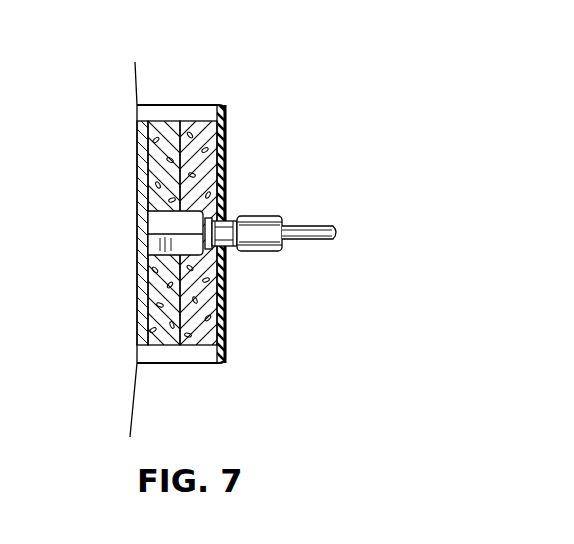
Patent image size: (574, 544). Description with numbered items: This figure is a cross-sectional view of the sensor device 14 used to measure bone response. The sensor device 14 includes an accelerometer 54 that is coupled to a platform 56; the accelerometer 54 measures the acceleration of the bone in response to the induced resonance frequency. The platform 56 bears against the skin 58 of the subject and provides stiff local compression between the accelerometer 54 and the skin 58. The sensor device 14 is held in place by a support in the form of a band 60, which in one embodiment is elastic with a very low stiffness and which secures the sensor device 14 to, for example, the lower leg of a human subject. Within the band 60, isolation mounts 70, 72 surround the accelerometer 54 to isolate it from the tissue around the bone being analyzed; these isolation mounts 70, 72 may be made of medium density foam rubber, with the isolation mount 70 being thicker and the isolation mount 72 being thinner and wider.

The sensor device 14 is at (264, 83).
The accelerometer 54 is at (185, 213).
The platform 56 is at (142, 291).
The skin 58 is at (135, 391).
The band 60 is at (227, 140).
The isolation mount 70 is at (164, 128).
The isolation mount 72 is at (198, 127).